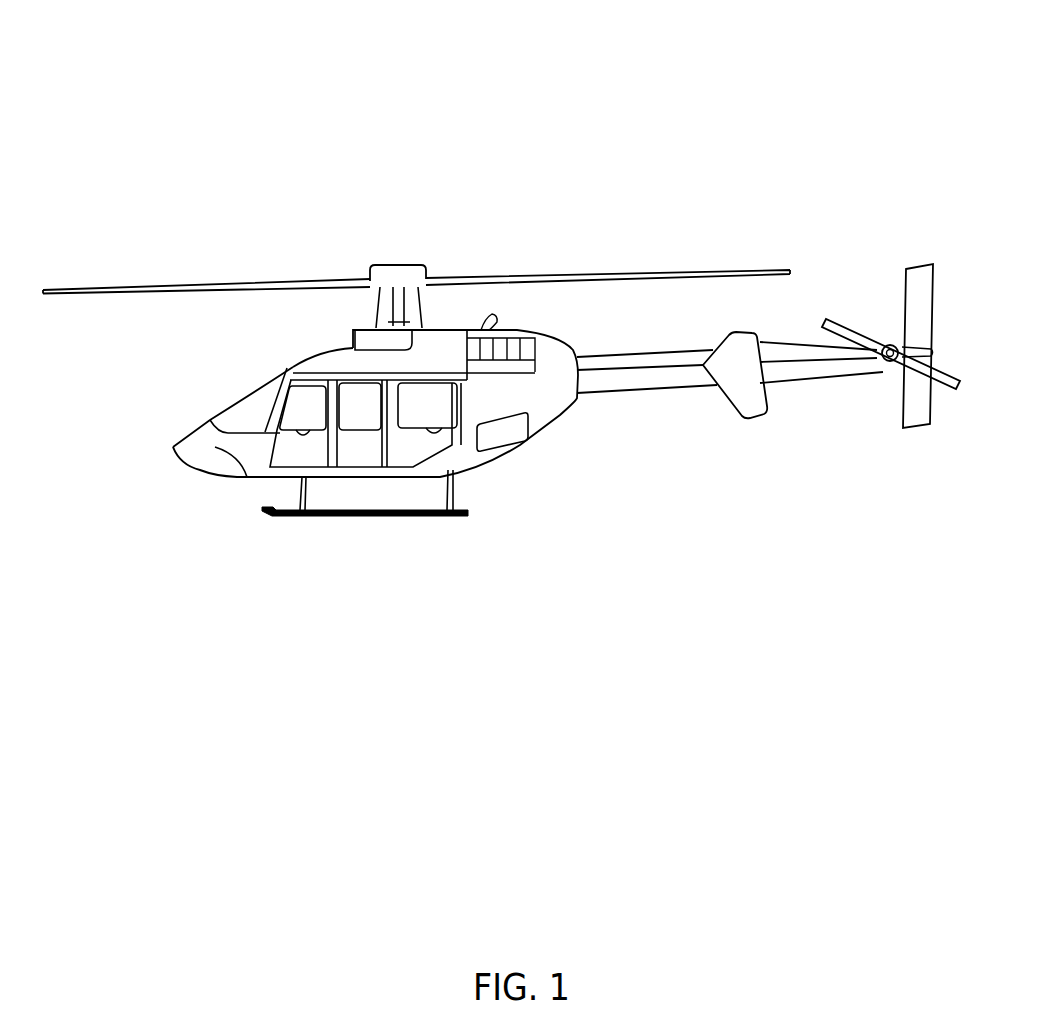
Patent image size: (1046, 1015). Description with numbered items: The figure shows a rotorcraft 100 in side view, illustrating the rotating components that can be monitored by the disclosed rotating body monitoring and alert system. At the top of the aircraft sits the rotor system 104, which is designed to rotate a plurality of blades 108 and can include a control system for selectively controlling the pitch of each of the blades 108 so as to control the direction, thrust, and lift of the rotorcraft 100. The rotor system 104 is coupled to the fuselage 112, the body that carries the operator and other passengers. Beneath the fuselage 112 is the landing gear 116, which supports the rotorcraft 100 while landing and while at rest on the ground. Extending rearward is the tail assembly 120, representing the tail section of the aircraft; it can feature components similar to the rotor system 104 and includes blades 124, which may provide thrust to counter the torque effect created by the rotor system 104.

The rotorcraft 100 is at (501, 332).
The rotor system 104 is at (416, 293).
The plurality of blades 108 is at (141, 332).
The fuselage 112 is at (480, 478).
The landing gear 116 is at (400, 518).
The tail assembly 120 is at (876, 367).
The blades 124 is at (845, 300).